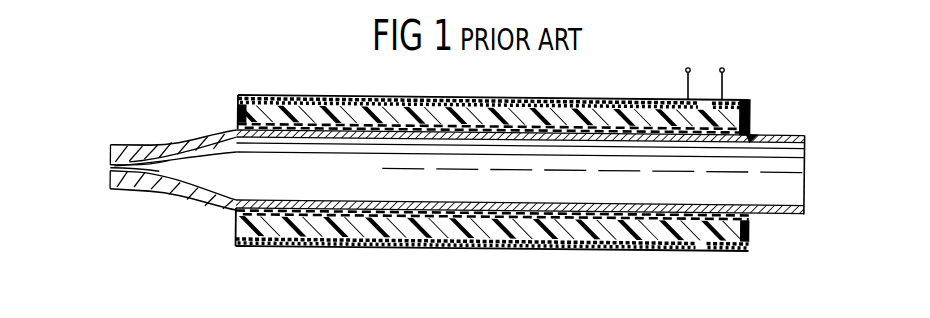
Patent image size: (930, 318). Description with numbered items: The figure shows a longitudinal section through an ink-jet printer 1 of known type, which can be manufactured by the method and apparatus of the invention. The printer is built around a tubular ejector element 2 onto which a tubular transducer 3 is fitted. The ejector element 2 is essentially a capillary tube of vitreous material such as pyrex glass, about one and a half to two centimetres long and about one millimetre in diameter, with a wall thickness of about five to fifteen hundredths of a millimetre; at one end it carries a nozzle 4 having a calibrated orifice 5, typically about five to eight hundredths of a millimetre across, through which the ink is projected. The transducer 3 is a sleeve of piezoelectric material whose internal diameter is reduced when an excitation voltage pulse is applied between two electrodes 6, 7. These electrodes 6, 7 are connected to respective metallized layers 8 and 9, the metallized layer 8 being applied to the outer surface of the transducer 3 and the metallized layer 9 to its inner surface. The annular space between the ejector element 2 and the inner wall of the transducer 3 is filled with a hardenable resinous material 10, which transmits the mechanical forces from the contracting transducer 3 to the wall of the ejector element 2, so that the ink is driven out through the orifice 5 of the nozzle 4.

The ink-jet printer 1 is at (227, 216).
The tubular ejector element 2 is at (801, 137).
The tubular transducer 3 is at (448, 115).
The nozzle 4 is at (125, 146).
The calibrated orifice 5 is at (112, 168).
The electrode 6 is at (688, 67).
The electrode 7 is at (722, 67).
The metallized layer 8 is at (298, 96).
The metallized layer 9 is at (751, 100).
The hardenable resinous material 10 is at (233, 127).